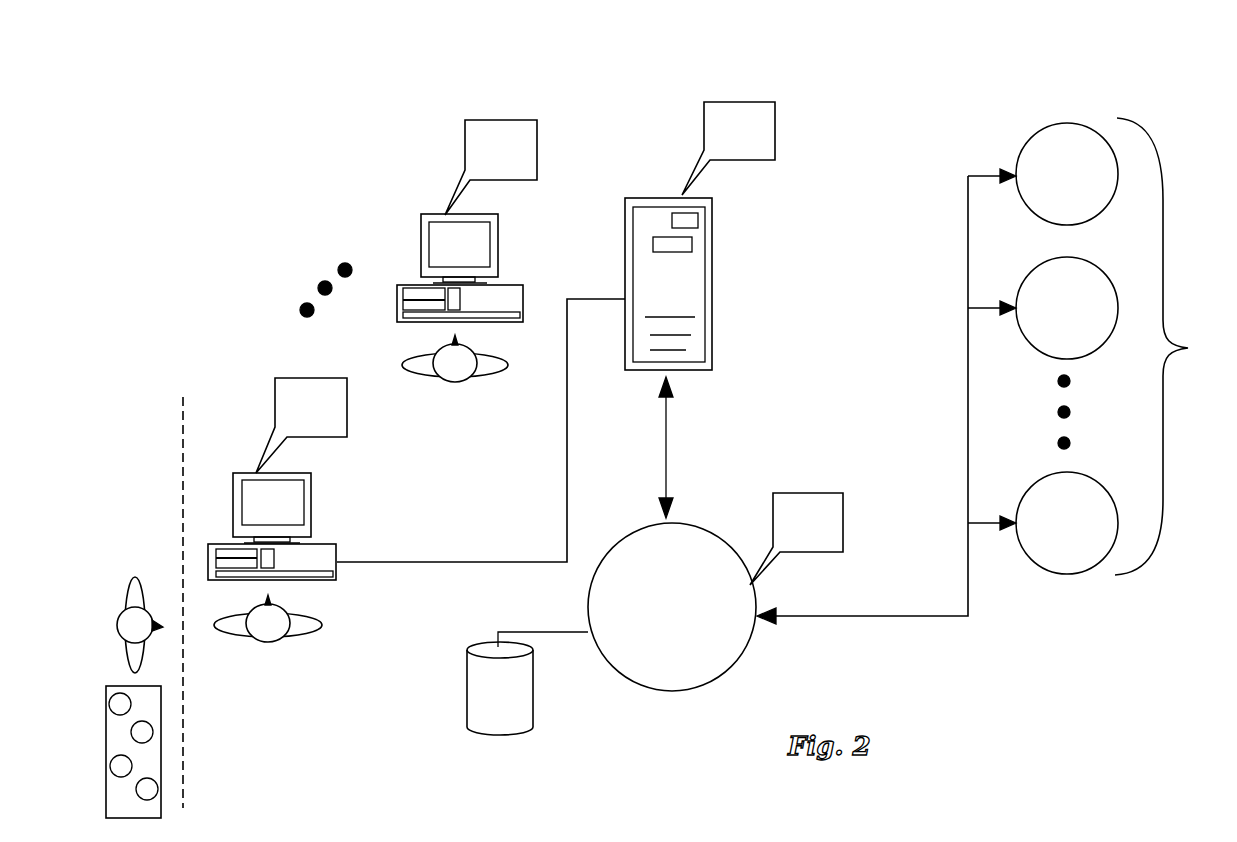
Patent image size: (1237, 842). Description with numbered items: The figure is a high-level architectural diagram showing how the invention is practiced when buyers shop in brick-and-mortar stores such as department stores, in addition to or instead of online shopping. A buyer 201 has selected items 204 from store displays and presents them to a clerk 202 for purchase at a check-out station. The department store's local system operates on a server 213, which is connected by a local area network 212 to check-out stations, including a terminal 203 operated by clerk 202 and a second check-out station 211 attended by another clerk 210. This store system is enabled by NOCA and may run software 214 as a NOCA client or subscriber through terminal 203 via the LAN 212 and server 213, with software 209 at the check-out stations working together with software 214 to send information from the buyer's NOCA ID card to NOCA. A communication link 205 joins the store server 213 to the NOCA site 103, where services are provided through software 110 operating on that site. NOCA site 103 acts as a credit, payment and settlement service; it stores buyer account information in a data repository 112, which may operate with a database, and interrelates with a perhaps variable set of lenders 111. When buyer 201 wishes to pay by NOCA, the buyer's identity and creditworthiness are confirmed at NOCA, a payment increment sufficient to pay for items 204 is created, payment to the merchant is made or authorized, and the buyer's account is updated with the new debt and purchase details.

The NOCA site 103 is at (692, 537).
The software 110 is at (810, 493).
The lenders 111 is at (992, 371).
The data repository 112 is at (477, 694).
The buyer 201 is at (135, 552).
The clerk 202 is at (279, 655).
The check-out station terminal 203 is at (323, 542).
The items 204 is at (106, 731).
The bidirectional communication link 205 is at (666, 432).
The software 209 is at (303, 378).
The clerk 210 is at (468, 396).
The check-out station 211 is at (510, 283).
The local area network (LAN) 212 is at (445, 562).
The server 213 is at (713, 306).
The software 214 is at (731, 101).